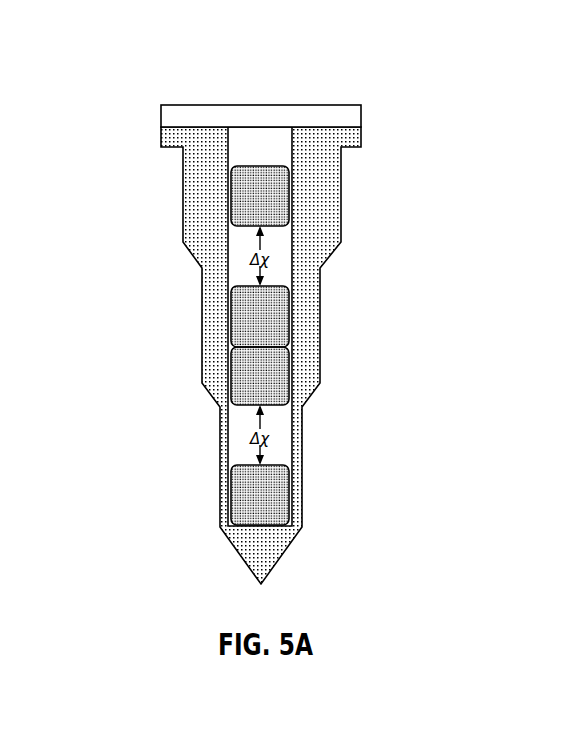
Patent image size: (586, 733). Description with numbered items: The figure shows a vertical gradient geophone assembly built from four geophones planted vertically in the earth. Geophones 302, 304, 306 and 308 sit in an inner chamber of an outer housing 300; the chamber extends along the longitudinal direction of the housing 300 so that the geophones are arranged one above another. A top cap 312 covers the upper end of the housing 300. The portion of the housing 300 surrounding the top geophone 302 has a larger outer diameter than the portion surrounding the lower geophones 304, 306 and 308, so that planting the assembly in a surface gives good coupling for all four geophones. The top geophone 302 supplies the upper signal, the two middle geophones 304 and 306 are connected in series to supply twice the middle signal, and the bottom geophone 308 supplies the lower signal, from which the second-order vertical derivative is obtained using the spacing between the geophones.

The outer housing 300 is at (200, 241).
The geophone 302 is at (285, 208).
The geophone 304 is at (285, 330).
The geophone 306 is at (285, 388).
The geophone 308 is at (284, 488).
The top cap 312 is at (284, 105).